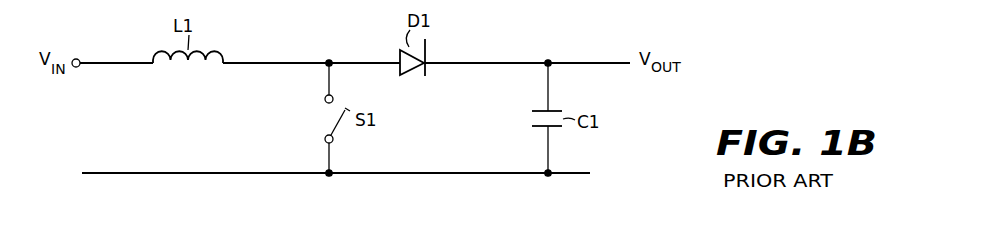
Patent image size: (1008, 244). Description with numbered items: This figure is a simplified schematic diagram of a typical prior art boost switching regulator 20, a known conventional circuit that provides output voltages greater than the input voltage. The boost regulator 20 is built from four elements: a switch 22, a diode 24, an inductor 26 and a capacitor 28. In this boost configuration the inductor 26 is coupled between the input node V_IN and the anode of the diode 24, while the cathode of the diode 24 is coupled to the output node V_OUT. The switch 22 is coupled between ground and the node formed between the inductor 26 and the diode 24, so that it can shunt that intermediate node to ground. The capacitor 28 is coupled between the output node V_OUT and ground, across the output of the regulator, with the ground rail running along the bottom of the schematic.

The boost regulator 20 is at (633, 137).
The switch 22 is at (333, 120).
The diode 24 is at (427, 57).
The inductor 26 is at (186, 64).
The capacitor 28 is at (531, 128).